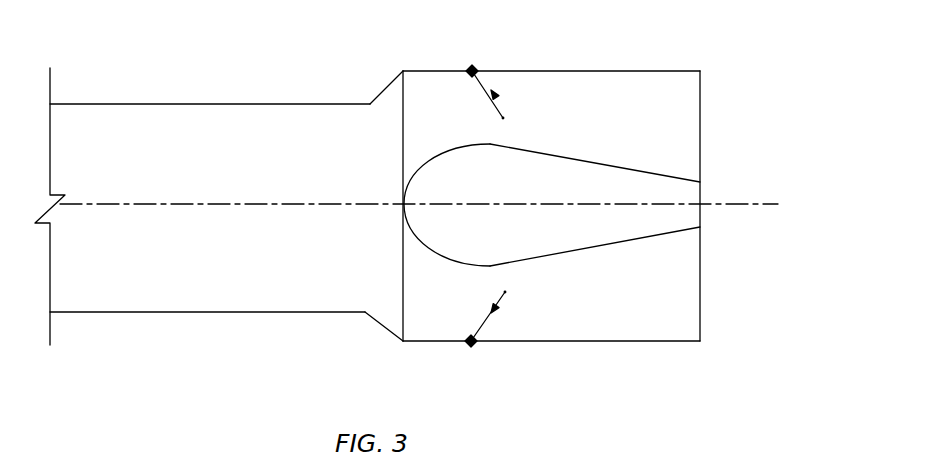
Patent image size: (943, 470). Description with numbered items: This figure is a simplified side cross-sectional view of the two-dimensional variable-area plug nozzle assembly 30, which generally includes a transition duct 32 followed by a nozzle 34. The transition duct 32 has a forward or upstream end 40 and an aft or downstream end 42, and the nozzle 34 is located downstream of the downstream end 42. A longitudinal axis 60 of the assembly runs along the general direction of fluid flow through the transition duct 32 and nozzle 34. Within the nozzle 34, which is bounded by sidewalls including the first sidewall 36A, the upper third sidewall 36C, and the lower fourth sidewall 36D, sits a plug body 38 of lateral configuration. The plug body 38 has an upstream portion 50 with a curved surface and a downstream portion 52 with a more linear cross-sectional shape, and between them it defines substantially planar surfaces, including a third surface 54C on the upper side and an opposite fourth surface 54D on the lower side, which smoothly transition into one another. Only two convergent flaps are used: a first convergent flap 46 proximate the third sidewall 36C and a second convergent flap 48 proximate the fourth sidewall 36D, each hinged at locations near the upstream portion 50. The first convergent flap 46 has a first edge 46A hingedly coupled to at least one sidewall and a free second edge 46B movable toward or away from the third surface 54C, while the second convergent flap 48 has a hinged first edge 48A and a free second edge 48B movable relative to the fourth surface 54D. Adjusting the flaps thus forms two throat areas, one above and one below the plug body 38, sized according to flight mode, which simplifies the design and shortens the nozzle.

The 2D VAP nozzle assembly 30 is at (778, 60).
The transition duct 32 is at (172, 281).
The nozzle 34 is at (695, 314).
The first sidewall 36A is at (688, 97).
The third sidewall 36C is at (425, 71).
The fourth sidewall 36D is at (428, 328).
The plug body 38 is at (682, 228).
The upstream end 40 is at (178, 104).
The downstream end 42 is at (385, 89).
The first convergent flap 46 is at (494, 92).
The first edge of first convergent flap 46A is at (471, 66).
The second edge of first convergent flap 46B is at (503, 118).
The second convergent flap 48 is at (498, 323).
The first edge of second convergent flap 48A is at (475, 346).
The second edge of second convergent flap 48B is at (505, 292).
The upstream portion 50 is at (450, 254).
The downstream portion 52 is at (673, 178).
The third surface 54C is at (598, 165).
The fourth surface 54D is at (575, 252).
The longitudinal axis 60 is at (146, 204).